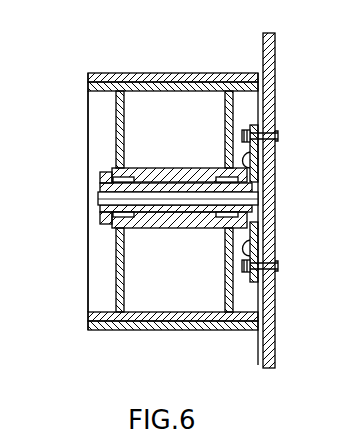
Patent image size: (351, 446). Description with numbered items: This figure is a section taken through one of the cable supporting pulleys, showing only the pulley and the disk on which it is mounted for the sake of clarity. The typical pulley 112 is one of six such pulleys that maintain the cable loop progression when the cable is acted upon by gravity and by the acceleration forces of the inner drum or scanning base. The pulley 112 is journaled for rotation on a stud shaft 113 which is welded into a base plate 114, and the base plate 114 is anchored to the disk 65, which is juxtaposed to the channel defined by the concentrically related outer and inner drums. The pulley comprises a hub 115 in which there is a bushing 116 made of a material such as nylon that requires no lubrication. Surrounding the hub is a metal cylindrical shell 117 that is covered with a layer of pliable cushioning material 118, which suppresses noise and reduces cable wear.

The disk 65 is at (276, 80).
The pulley 112 is at (203, 66).
The stud shaft 113 is at (107, 203).
The base plate 114 is at (252, 170).
The hub 115 is at (162, 170).
The bushing 116 is at (100, 188).
The metal cylindrical shell 117 is at (100, 102).
The layer of pliable cushioning material 118 is at (138, 72).